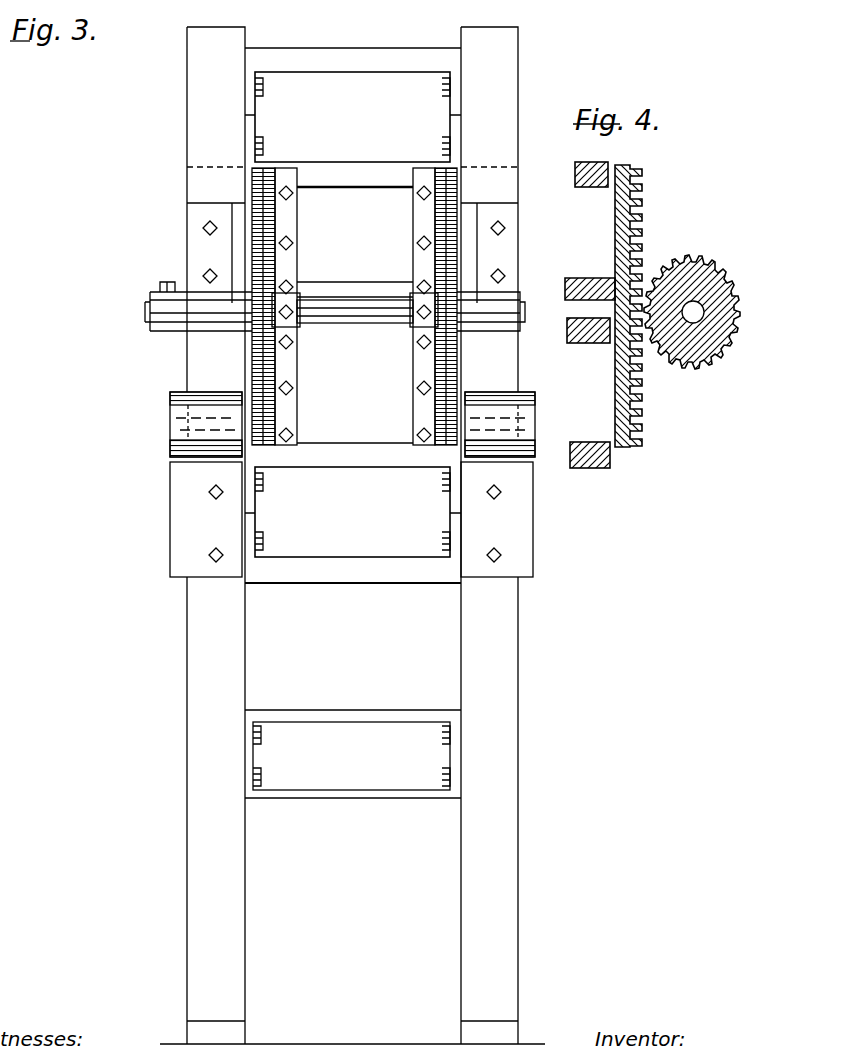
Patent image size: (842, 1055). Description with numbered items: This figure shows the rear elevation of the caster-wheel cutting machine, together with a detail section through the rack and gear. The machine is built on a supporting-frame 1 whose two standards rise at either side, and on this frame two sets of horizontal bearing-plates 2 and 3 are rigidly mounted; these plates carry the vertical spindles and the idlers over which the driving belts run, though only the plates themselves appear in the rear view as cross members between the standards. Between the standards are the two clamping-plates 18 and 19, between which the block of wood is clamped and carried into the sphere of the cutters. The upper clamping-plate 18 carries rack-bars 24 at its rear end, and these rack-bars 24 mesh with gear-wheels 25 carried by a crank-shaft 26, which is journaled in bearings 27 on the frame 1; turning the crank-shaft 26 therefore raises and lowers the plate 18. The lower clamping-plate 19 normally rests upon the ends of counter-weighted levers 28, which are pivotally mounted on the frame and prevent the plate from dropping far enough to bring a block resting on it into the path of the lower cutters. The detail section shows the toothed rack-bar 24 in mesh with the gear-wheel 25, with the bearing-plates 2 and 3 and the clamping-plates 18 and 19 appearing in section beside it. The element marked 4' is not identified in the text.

In FIG. 3, the supporting-frame 1 is at (235, 640).
In FIG. 3, the cross plates 4' is at (352, 314).
In FIG. 3, the bearings 27 is at (200, 248).
In FIG. 3, the rack-bars 24 is at (426, 402).
In FIG. 4, the rack-bars 24 is at (643, 220).
In FIG. 3, the crank-shaft 26 is at (373, 325).
In FIG. 3, the counter-weighted levers 28 is at (180, 432).
In FIG. 4, the bearing-plate 2 is at (596, 190).
In FIG. 4, the clamping-plate 18 is at (577, 280).
In FIG. 4, the clamping-plate 19 is at (583, 345).
In FIG. 4, the bearing-plate 3 is at (590, 452).
In FIG. 4, the gear-wheels 25 is at (700, 262).